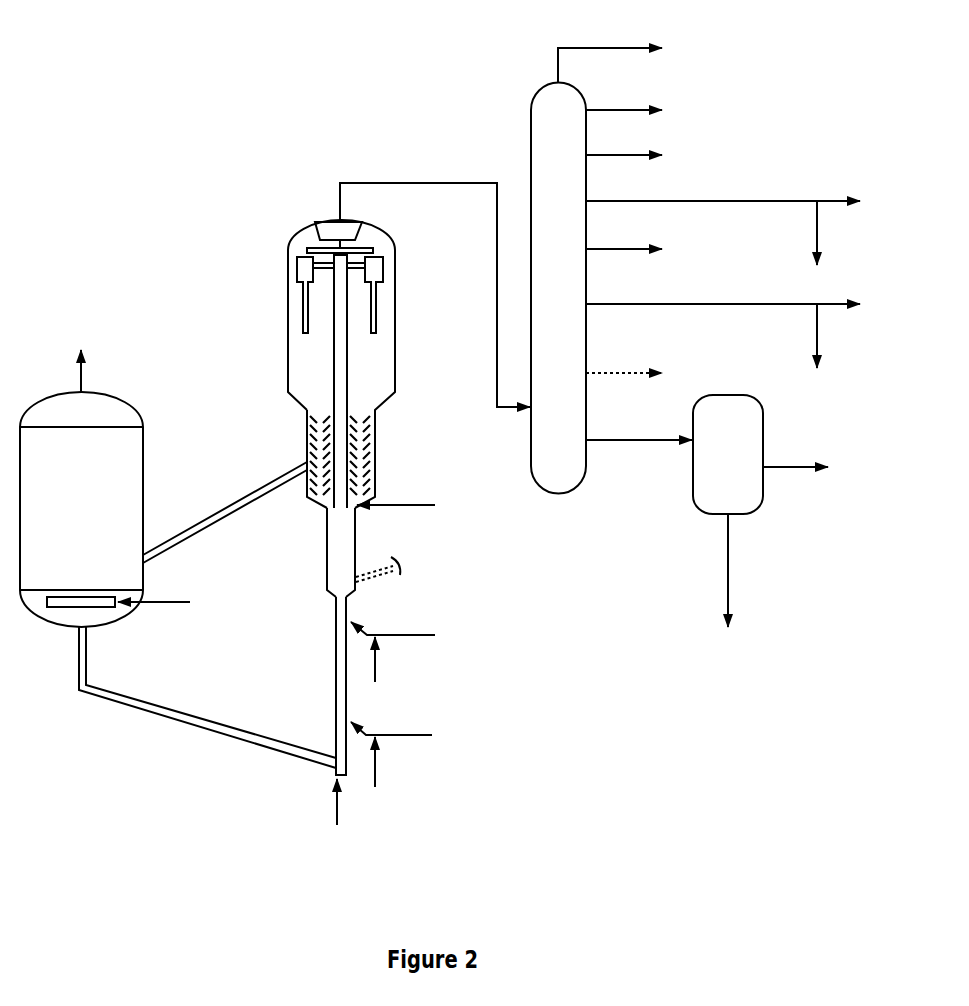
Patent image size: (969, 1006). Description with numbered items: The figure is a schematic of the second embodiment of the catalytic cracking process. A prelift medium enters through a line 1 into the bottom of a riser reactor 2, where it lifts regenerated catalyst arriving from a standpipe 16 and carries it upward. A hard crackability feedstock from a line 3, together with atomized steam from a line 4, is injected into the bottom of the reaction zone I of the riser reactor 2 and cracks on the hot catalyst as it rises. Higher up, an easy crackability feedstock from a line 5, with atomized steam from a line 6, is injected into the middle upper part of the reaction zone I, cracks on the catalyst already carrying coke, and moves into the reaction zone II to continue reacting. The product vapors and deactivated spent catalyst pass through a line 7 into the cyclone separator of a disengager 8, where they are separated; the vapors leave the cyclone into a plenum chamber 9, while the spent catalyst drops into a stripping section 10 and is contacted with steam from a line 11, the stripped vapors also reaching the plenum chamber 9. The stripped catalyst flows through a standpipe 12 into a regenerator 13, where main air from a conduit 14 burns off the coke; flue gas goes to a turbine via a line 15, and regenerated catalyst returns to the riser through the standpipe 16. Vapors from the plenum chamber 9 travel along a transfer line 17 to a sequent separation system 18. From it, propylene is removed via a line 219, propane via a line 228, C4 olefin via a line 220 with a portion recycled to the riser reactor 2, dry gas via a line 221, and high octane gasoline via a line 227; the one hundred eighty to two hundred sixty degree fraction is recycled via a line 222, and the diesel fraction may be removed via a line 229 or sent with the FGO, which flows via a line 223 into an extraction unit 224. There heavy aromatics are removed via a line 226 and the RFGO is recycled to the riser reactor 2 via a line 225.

The line 1 is at (327, 802).
The riser reactor 2 is at (337, 690).
The line 3 is at (427, 709).
The line 4 is at (387, 762).
The line 5 is at (427, 610).
The line 6 is at (387, 660).
The line 7 is at (342, 363).
The disengager 8 is at (341, 364).
The plenum chamber 9 is at (338, 233).
The stripping section 10 is at (362, 440).
The line 11 is at (396, 492).
The standpipe 12 is at (225, 512).
The regenerator 13 is at (81, 509).
The conduit 14 is at (118, 591).
The line 15 is at (64, 371).
The standpipe 16 is at (207, 699).
The transfer line 17 is at (435, 278).
The sequent separation system 18 is at (558, 287).
The line 219 is at (624, 95).
The line 220 is at (723, 218).
The line 221 is at (610, 51).
The line 222 is at (723, 321).
The line 223 is at (639, 424).
The extraction unit 224 is at (728, 454).
The line 225 is at (799, 450).
The line 226 is at (697, 570).
The line 227 is at (624, 235).
The line 228 is at (624, 140).
The line 229 is at (624, 362).
The reaction zone I is at (333, 648).
The reaction zone II is at (325, 560).